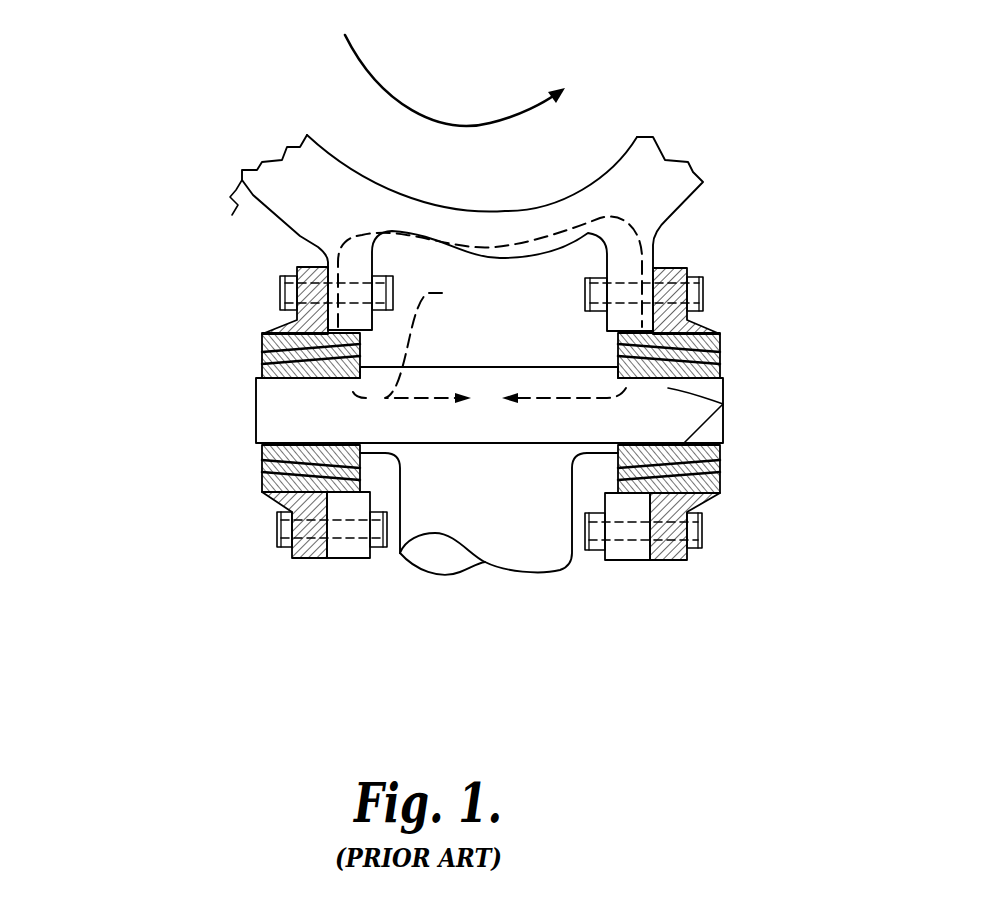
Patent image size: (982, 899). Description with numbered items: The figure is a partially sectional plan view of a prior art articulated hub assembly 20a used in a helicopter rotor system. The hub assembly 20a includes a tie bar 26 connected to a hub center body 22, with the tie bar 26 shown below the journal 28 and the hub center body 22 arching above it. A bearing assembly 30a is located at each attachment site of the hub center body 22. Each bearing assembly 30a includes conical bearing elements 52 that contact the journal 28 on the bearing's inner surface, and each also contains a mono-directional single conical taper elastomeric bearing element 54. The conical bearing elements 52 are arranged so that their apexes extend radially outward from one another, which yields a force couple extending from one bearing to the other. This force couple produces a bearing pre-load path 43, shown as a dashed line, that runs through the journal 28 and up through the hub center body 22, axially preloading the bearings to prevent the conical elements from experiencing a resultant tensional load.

The articulated hub assembly 20a is at (156, 90).
The hub center body 22 is at (253, 196).
The bearing pre-load path 43 is at (517, 237).
The tie bar 26 is at (550, 572).
The journal 28 is at (257, 427).
The bearing assembly 30a is at (255, 324).
The conical bearing elements 52 is at (723, 405).
The mono-directional single conical taper elastomeric bearing element 54 is at (262, 362).